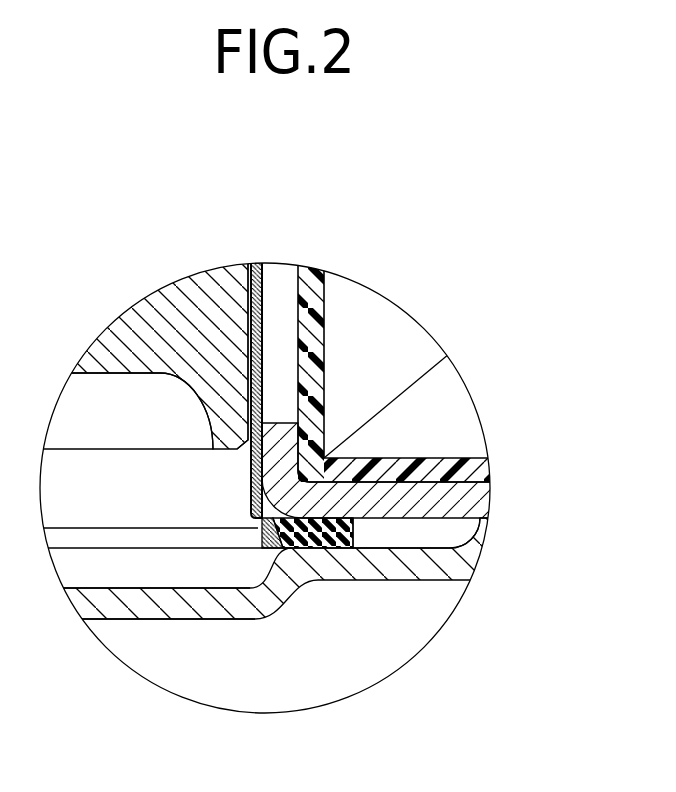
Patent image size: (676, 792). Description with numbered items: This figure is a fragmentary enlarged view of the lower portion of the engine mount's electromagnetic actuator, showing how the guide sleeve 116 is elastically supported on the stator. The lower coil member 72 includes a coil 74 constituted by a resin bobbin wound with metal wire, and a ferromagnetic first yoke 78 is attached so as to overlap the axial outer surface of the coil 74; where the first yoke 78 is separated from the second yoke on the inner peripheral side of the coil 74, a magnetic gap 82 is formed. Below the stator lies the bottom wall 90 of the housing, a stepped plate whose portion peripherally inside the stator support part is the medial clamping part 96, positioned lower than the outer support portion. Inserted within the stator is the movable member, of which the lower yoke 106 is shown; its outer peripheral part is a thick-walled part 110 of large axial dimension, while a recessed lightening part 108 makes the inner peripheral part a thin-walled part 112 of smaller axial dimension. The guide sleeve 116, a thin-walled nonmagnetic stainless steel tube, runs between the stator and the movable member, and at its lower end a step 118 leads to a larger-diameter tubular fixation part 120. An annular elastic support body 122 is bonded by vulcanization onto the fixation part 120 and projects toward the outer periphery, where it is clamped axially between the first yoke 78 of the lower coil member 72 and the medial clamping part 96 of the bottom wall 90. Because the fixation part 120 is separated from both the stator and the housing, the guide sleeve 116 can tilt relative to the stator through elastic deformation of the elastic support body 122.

The coil member 72 is at (426, 527).
The coil 74 is at (388, 327).
The first yoke 78 is at (445, 500).
The magnetic gap 82 is at (279, 387).
The bottom wall 90 is at (112, 628).
The medial clamping part 96 is at (370, 568).
The lower yoke 106 is at (128, 229).
The lightening part 108 is at (210, 421).
The thick-walled part 110 is at (232, 327).
The thin-walled part 112 is at (123, 345).
The guide sleeve 116 is at (269, 283).
The step 118 is at (268, 529).
The fixation part 120 is at (286, 538).
The elastic support body 122 is at (322, 535).